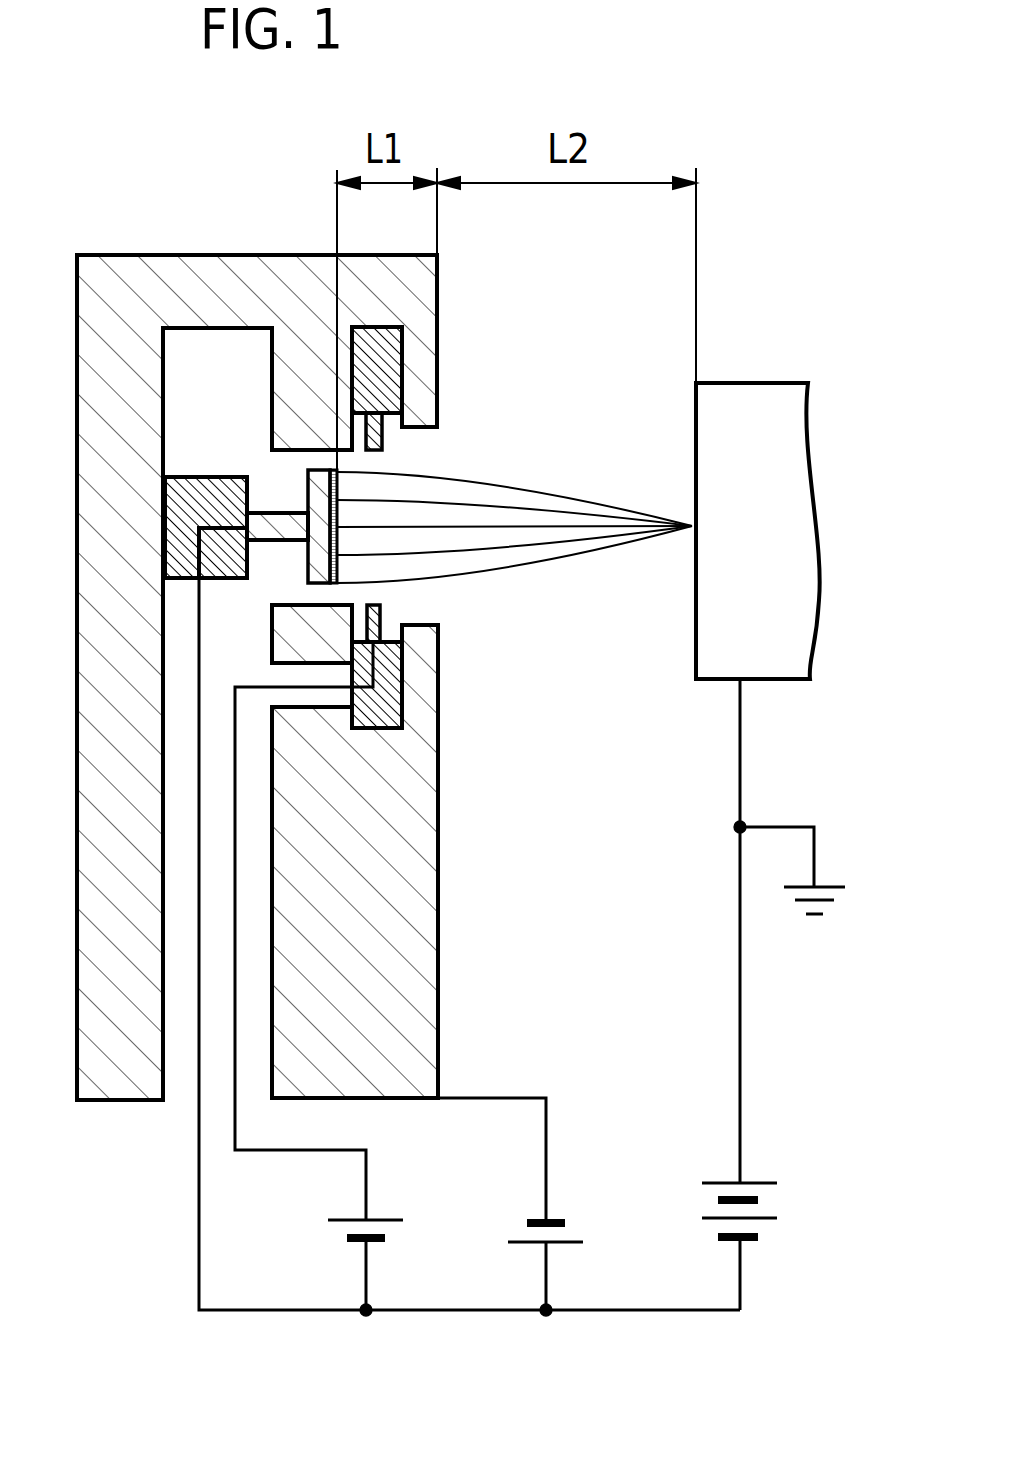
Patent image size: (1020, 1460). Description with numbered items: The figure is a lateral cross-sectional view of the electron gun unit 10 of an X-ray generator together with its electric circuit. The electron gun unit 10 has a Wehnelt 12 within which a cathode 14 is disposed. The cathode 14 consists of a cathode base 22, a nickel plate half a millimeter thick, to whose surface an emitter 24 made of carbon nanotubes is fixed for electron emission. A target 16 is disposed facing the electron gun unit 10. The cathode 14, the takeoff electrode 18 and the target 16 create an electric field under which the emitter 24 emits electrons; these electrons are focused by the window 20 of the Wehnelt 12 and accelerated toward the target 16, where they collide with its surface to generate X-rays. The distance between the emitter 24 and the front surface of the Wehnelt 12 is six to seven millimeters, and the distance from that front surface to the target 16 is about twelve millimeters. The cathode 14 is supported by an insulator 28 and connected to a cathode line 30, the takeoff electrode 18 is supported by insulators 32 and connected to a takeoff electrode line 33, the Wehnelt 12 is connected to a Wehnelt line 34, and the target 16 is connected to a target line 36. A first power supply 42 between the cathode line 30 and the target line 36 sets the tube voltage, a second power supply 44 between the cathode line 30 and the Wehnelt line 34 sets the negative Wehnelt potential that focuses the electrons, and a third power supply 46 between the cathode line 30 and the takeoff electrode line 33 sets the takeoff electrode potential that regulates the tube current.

The electron gun unit 10 is at (384, 677).
The Wehnelt 12 is at (440, 876).
The cathode 14 is at (486, 622).
The target 16 is at (763, 382).
The takeoff electrode 18 is at (383, 442).
The window 20 is at (427, 428).
The cathode base 22 is at (317, 583).
The emitter 24 is at (337, 573).
The insulator 28 is at (210, 473).
The cathode line 30 is at (197, 1202).
The insulators 32 is at (403, 348).
The takeoff electrode line 33 is at (262, 1153).
The Wehnelt line 34 is at (548, 1123).
The target line 36 is at (745, 1012).
The first power supply 42 is at (778, 1208).
The second power supply 44 is at (577, 1232).
The third power supply 46 is at (400, 1232).